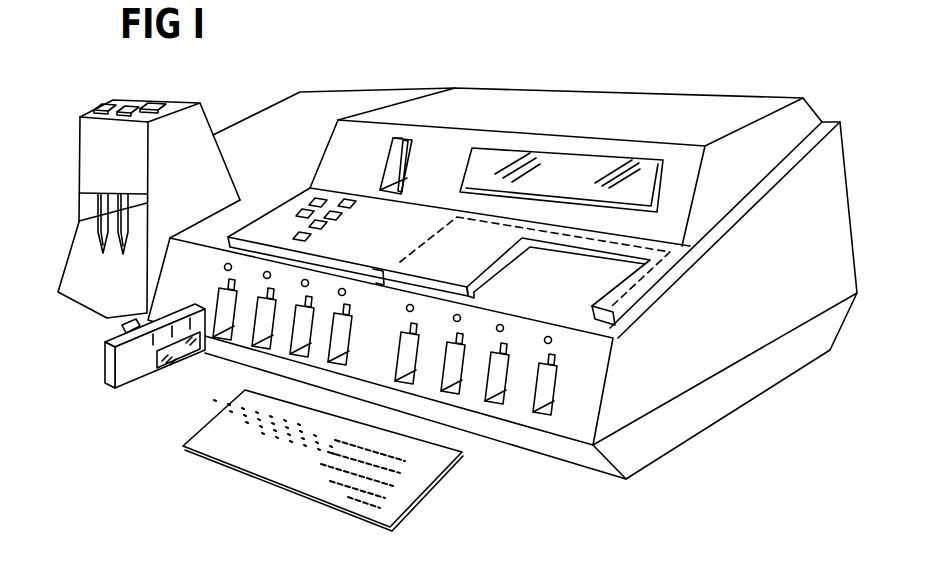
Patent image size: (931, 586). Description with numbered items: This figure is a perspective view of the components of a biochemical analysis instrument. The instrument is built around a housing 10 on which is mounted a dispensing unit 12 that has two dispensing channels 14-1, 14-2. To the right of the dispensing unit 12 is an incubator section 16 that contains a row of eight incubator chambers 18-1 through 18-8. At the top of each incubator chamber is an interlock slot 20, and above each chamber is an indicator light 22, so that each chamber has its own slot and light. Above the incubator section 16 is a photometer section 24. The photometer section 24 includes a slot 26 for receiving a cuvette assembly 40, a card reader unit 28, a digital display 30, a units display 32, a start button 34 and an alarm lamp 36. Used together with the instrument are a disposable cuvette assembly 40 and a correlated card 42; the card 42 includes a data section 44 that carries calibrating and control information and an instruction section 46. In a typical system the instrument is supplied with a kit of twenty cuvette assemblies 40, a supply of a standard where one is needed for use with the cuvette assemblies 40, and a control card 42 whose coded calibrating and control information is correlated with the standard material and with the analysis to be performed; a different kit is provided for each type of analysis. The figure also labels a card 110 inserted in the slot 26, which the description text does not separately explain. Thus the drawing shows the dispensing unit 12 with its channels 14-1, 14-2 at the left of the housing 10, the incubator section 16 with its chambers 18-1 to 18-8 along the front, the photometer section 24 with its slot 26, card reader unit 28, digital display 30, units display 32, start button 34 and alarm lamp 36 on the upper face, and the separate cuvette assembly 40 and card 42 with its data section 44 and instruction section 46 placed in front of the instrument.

The housing 10 is at (733, 410).
The dispensing unit 12 is at (77, 114).
The dispensing channel 14-1 is at (118, 253).
The dispensing channel 14-2 is at (100, 243).
The incubator section 16 is at (572, 383).
The incubator chamber 18-1 is at (222, 332).
The incubator chamber 18-8 is at (550, 416).
The interlock slot 20 is at (232, 280).
The indicator light 22 is at (224, 266).
The photometer section 24 is at (390, 134).
The slot 26 is at (394, 164).
The card reader unit 28 is at (485, 250).
The digital display 30 is at (553, 165).
The units display 32 is at (330, 226).
The start button 34 is at (312, 200).
The alarm lamp 36 is at (303, 209).
The cuvette assembly 40 is at (98, 373).
The card 42 is at (309, 471).
The data section 44 is at (210, 437).
The instruction section 46 is at (354, 488).
The card 110 is at (408, 143).